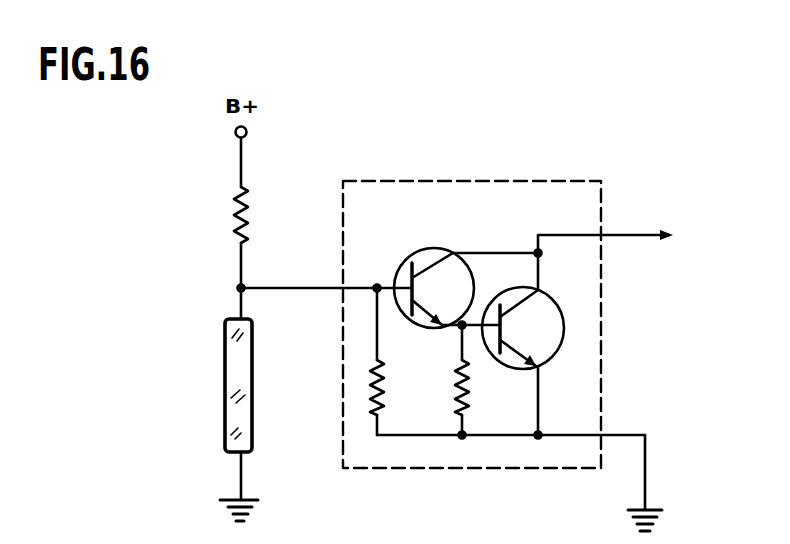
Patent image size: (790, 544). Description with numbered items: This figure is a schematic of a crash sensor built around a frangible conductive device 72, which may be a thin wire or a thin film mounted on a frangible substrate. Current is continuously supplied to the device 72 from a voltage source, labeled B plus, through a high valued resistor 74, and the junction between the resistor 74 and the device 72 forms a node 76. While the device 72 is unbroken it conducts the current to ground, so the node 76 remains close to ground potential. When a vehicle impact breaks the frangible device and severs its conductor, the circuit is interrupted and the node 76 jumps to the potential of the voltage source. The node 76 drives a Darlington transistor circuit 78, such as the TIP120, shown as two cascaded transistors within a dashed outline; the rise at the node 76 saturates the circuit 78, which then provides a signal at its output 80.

The frangible conductive device 72 is at (225, 363).
The high valued resistor 74 is at (247, 217).
The node 76 is at (235, 288).
The Darlington transistor circuit 78 is at (468, 173).
The output 80 is at (648, 221).